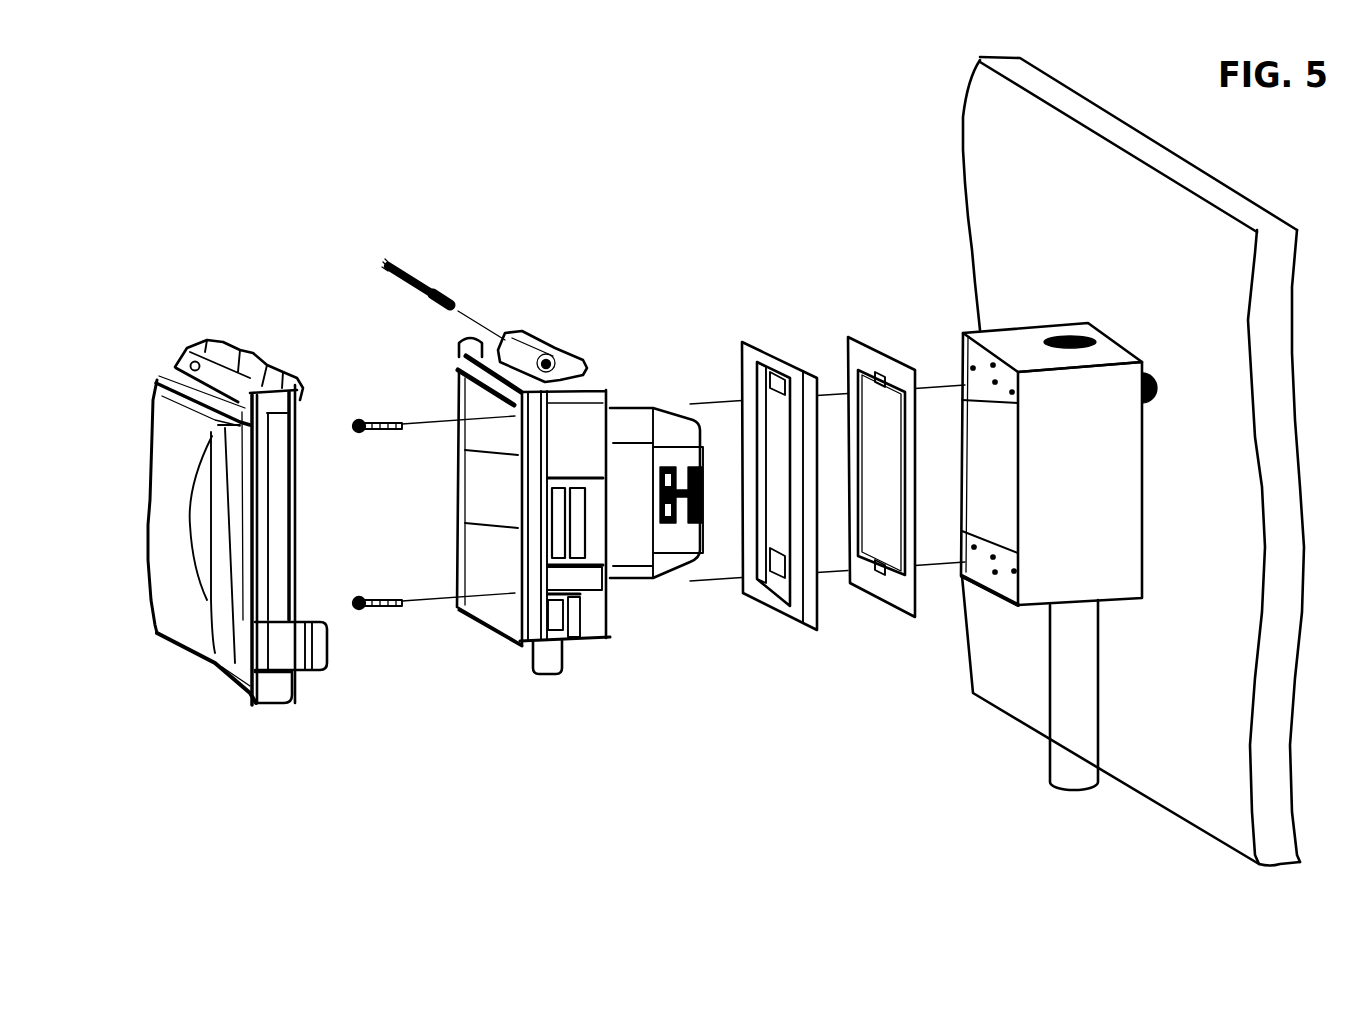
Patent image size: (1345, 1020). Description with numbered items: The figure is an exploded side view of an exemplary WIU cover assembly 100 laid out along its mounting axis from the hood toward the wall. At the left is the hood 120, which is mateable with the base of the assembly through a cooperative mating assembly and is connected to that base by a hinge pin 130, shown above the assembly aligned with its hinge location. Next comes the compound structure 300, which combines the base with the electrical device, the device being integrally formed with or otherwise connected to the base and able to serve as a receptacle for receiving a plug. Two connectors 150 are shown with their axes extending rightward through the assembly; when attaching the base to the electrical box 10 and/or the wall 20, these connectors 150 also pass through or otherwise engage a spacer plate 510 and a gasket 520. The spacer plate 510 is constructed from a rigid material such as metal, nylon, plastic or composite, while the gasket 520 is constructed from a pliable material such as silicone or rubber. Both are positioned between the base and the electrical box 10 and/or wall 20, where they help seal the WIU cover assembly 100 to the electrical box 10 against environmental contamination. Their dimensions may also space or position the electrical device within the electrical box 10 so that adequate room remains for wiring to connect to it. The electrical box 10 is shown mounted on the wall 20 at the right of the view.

The WIU cover assembly 100 is at (329, 173).
The hood 120 is at (250, 705).
The hinge pin 130 is at (428, 288).
The connectors 150 is at (386, 436).
The compound structure 300 is at (600, 647).
The spacer plate 510 is at (806, 632).
The gasket 520 is at (888, 618).
The electrical box 10 is at (1094, 488).
The wall 20 is at (1206, 302).